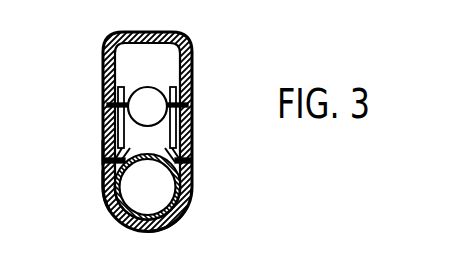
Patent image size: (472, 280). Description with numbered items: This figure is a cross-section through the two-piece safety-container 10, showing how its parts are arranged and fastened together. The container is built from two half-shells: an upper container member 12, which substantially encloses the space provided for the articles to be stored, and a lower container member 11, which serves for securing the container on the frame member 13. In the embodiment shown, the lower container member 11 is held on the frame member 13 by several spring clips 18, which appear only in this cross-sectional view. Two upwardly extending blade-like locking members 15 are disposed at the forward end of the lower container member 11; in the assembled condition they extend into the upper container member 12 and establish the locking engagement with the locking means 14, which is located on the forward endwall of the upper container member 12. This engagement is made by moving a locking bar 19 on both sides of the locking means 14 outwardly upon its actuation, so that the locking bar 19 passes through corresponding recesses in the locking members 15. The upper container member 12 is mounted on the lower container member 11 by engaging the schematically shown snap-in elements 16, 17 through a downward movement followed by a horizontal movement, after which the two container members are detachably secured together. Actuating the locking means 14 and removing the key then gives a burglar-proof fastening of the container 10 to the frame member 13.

The safety-container 10 is at (211, 64).
The lower container member 11 is at (181, 178).
The upper container member 12 is at (192, 100).
The frame member 13 is at (178, 207).
The locking means 14 is at (143, 100).
The locking members 15 is at (118, 122).
The snap-in element 16 is at (108, 150).
The snap-in element 17 is at (106, 176).
The spring clips 18 is at (112, 162).
The locking bar 19 is at (112, 105).